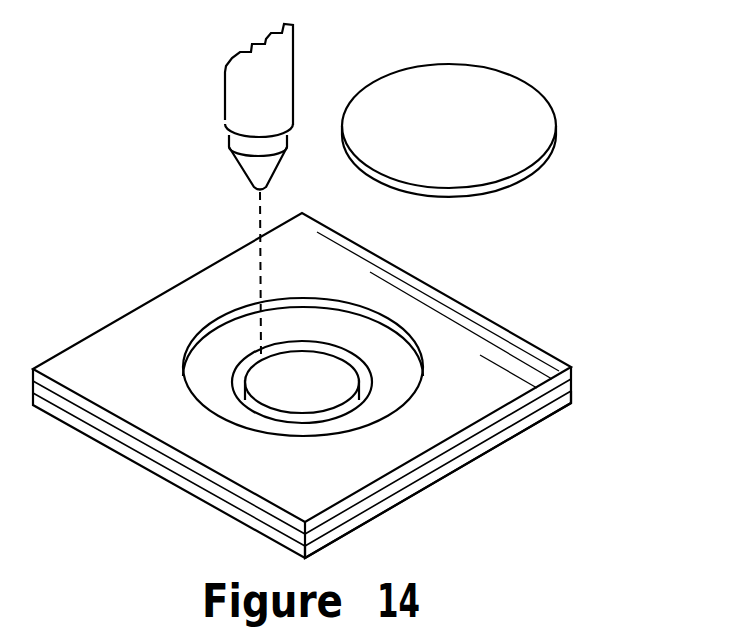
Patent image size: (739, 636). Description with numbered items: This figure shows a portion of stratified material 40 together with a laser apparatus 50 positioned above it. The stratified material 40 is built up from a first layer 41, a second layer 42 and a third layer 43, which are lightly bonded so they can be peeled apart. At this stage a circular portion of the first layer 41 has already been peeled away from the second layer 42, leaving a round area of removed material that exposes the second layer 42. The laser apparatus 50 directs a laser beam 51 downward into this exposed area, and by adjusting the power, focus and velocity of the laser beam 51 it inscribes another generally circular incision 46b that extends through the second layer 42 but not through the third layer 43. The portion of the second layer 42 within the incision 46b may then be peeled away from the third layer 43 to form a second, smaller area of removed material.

The stratified material 40 is at (497, 303).
The first layer 41 is at (557, 122).
The second layer 42 is at (392, 388).
The third layer 43 is at (542, 418).
The incision 46b is at (242, 376).
The laser apparatus 50 is at (211, 98).
The laser beam 51 is at (259, 208).